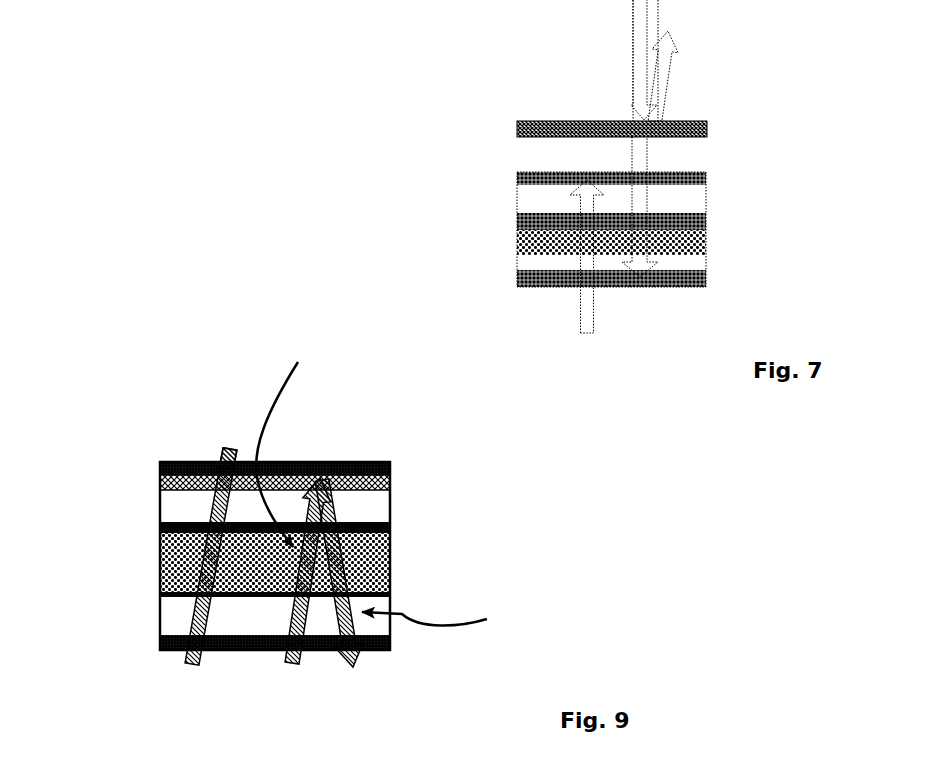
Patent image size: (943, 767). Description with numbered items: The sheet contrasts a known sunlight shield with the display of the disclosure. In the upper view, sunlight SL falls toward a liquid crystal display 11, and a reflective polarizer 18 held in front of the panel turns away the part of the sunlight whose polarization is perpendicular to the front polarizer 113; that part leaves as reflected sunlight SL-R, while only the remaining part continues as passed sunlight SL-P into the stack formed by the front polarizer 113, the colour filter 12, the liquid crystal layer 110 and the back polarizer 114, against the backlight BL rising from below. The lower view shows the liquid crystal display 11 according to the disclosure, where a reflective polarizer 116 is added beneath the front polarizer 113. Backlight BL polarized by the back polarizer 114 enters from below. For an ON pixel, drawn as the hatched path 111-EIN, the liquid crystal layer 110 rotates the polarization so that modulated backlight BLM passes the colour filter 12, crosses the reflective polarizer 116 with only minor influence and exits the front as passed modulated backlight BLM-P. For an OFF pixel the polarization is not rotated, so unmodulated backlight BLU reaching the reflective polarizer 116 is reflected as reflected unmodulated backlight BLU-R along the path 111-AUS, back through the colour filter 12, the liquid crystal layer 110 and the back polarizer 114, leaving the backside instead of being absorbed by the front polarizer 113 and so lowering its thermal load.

In FIG. 7, the liquid crystal display 11 is at (455, 228).
In FIG. 9, the liquid crystal display 11 is at (582, 546).
In FIG. 7, the colour filter 12 is at (706, 222).
In FIG. 9, the colour filter 12 is at (393, 528).
In FIG. 7, the reflective polarizer 18 is at (505, 128).
In FIG. 7, the liquid crystal layer 110 is at (711, 248).
In FIG. 9, the liquid crystal layer 110 is at (393, 565).
In FIG. 7, the front polarizer 113 is at (709, 175).
In FIG. 9, the front polarizer 113 is at (160, 462).
In FIG. 7, the back polarizer 114 is at (710, 278).
In FIG. 9, the back polarizer 114 is at (160, 637).
In FIG. 9, the reflective polarizer 116 is at (393, 480).
In FIG. 7, the sunlight SL is at (625, 33).
In FIG. 7, the passed sunlight SL-P is at (628, 155).
In FIG. 7, the reflected sunlight SL-R is at (676, 47).
In FIG. 7, the backlight BL is at (601, 321).
In FIG. 9, the backlight BL is at (190, 672).
In FIG. 9, the modulated backlight BLM is at (197, 553).
In FIG. 9, the passed modulated backlight BLM-P is at (213, 445).
In FIG. 9, the unmodulated backlight BLU is at (286, 443).
In FIG. 9, the reflected unmodulated backlight BLU-R is at (455, 616).
In FIG. 9, the incoming light path 111-EIN is at (236, 602).
In FIG. 9, the outgoing light path 111-AUS is at (321, 602).